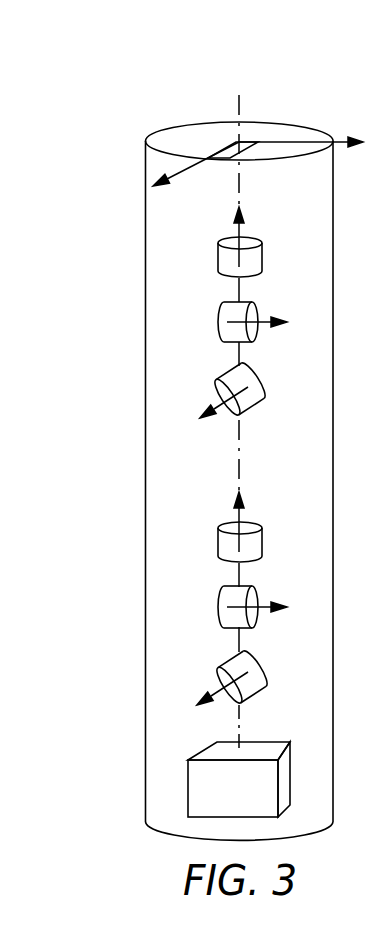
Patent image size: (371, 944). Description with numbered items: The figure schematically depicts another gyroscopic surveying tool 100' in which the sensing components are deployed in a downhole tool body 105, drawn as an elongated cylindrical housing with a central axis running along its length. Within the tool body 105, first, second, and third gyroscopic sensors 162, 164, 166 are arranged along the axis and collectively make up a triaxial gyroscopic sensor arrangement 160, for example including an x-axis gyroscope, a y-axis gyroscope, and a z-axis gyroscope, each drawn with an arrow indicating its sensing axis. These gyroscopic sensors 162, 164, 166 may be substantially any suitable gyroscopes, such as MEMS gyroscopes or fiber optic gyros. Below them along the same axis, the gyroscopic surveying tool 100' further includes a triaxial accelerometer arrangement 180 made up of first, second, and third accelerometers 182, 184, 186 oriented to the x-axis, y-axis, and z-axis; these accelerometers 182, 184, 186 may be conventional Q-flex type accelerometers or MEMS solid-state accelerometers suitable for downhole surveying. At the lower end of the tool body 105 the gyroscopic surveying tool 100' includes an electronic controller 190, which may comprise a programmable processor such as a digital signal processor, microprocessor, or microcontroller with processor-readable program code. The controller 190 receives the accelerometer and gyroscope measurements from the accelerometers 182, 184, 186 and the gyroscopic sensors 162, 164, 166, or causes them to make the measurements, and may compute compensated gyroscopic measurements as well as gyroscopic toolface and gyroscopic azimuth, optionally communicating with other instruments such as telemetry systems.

The gyroscopic surveying tool 100' is at (258, 391).
The downhole tool body 105 is at (145, 250).
The triaxial gyroscopic sensor arrangement 160 is at (240, 308).
The first gyroscopic sensor 162 is at (219, 317).
The second gyroscopic sensor 164 is at (264, 387).
The third gyroscopic sensor 166 is at (263, 253).
The triaxial accelerometer arrangement 180 is at (240, 593).
The first accelerometer 182 is at (219, 602).
The second accelerometer 184 is at (264, 672).
The third accelerometer 186 is at (262, 542).
The electronic controller 190 is at (257, 803).